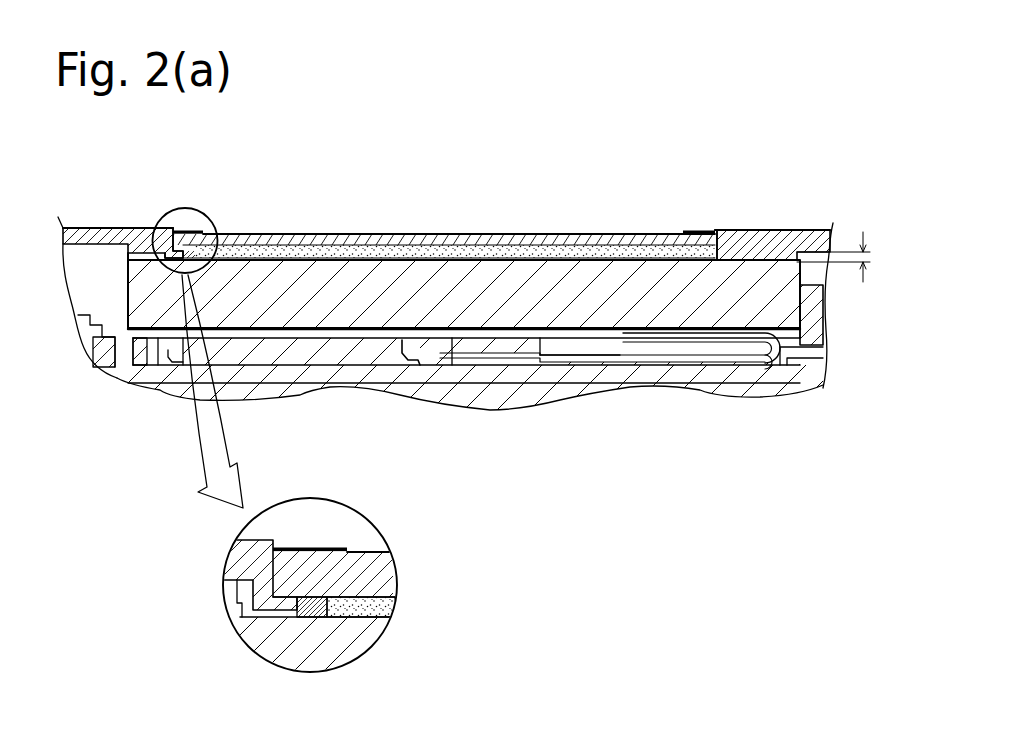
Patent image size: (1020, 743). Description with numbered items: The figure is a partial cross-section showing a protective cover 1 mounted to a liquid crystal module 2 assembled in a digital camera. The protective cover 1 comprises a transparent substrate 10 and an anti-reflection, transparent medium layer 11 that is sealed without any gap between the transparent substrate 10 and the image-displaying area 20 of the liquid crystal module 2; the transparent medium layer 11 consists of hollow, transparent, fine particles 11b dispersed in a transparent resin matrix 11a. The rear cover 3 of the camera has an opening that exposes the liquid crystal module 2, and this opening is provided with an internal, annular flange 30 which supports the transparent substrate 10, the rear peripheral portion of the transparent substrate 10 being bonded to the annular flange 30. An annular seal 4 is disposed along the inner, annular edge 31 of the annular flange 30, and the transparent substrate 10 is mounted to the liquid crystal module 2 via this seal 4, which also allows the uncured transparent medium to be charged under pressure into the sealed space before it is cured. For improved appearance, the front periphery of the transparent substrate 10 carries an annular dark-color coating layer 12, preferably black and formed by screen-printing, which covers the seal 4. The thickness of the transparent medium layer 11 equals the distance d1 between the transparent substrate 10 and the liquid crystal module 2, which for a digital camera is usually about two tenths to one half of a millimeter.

The protective cover 1 is at (335, 141).
The liquid crystal module 2 is at (465, 307).
The rear cover 3 is at (94, 228).
The annular seal 4 is at (218, 234).
The transparent substrate 10 is at (346, 240).
The anti-reflection, transparent medium layer 11 is at (459, 174).
The transparent resin matrix 11a is at (379, 245).
The hollow, transparent, fine particles 11b is at (431, 247).
The annular dark-color coating layer 12 is at (195, 231).
The image-displaying area 20 is at (580, 262).
The internal, annular flange 30 is at (172, 229).
The inner, annular edge 31 is at (302, 604).
The distance d1 is at (843, 257).